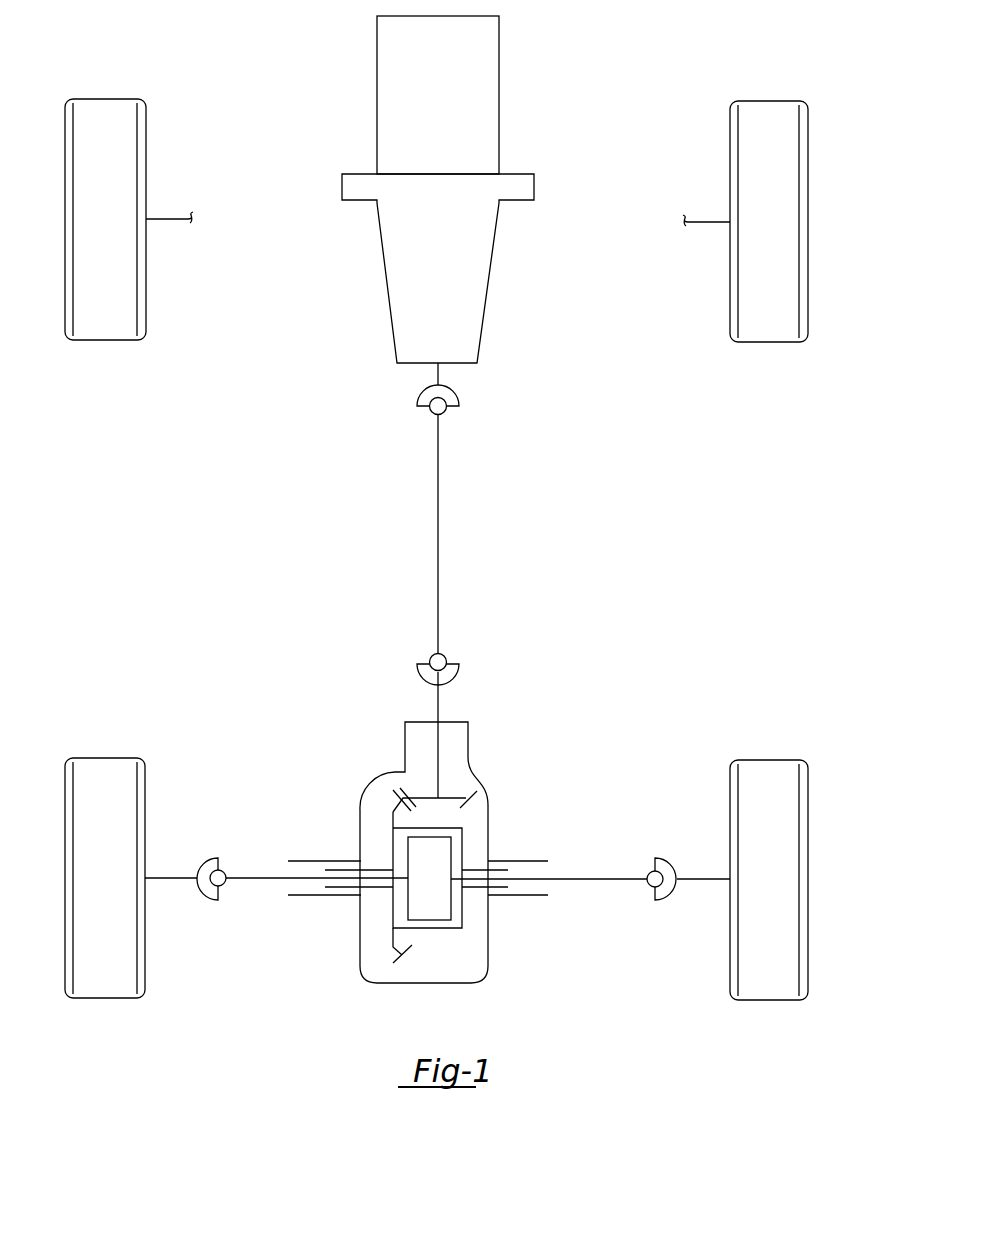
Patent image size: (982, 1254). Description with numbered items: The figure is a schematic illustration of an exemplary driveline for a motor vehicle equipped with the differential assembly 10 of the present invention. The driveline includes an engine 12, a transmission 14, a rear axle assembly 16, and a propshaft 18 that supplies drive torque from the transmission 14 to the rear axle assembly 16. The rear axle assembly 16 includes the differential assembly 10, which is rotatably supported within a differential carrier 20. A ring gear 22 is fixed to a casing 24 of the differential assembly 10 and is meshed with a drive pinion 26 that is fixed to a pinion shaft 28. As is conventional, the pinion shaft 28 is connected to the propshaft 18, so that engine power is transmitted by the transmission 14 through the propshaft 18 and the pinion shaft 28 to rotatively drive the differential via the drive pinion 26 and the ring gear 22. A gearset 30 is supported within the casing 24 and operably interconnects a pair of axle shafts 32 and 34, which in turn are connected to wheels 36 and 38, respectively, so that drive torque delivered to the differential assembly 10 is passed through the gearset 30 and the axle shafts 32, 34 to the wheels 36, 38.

The differential assembly 10 is at (468, 837).
The engine 12 is at (487, 108).
The transmission 14 is at (491, 283).
The rear axle assembly 16 is at (598, 741).
The propshaft 18 is at (438, 557).
The differential carrier 20 is at (452, 722).
The ring gear 22 is at (402, 955).
The casing 24 is at (437, 928).
The drive pinion 26 is at (478, 793).
The pinion shaft 28 is at (440, 747).
The gearset 30 is at (418, 895).
The axle shaft 32 is at (265, 877).
The axle shaft 34 is at (575, 869).
The wheel 36 is at (118, 758).
The wheel 38 is at (785, 760).